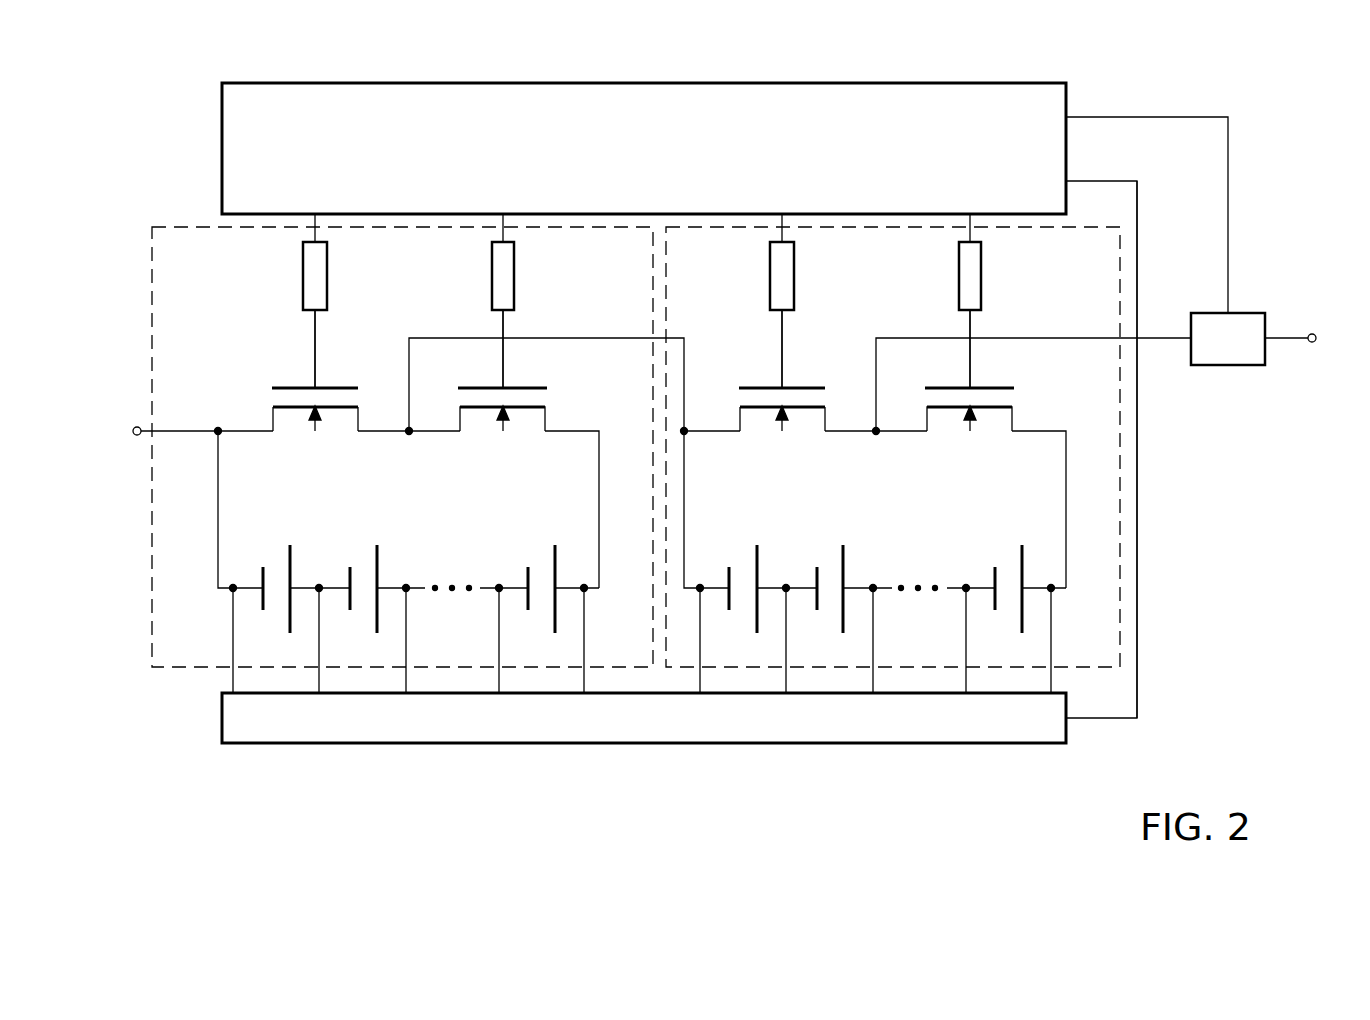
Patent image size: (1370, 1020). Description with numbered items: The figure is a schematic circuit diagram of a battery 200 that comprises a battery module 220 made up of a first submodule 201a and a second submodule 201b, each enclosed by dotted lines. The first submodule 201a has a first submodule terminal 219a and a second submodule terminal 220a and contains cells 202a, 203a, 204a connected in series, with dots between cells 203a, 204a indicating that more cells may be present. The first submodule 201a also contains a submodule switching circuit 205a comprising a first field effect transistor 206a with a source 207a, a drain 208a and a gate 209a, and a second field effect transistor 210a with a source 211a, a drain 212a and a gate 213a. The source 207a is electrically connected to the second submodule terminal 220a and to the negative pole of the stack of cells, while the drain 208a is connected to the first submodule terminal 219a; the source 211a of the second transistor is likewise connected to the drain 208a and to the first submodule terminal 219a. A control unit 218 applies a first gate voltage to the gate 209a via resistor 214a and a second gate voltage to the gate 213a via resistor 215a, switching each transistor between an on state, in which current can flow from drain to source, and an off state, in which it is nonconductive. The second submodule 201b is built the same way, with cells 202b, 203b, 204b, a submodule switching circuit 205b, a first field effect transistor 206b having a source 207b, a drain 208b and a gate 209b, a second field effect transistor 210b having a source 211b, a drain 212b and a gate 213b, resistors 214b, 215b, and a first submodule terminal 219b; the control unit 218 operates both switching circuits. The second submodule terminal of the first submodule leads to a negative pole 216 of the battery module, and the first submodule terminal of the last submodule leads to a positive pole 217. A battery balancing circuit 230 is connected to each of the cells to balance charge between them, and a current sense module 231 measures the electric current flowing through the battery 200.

The battery 200 is at (1290, 108).
The first submodule 201a is at (205, 668).
The second submodule 201b is at (1122, 656).
The cell 202a is at (292, 565).
The cell 202b is at (759, 565).
The cell 203a is at (380, 565).
The cell 203b is at (846, 565).
The cell 204a is at (558, 565).
The cell 204b is at (1025, 565).
The submodule switching circuit 205a is at (271, 370).
The submodule switching circuit 205b is at (762, 350).
The first field effect transistor 206a is at (272, 420).
The first field effect transistor 206b is at (739, 420).
The source 207a is at (250, 433).
The source 207b is at (717, 433).
The drain 208a is at (375, 433).
The drain 208b is at (842, 433).
The gate 209a is at (342, 386).
The gate 209b is at (808, 386).
The second field effect transistor 210a is at (526, 370).
The second field effect transistor 210b is at (994, 370).
The source 211a is at (435, 433).
The source 211b is at (903, 433).
The drain 212a is at (565, 433).
The drain 212b is at (1030, 433).
The gate 213a is at (503, 370).
The gate 213b is at (970, 370).
The resistor 214a is at (328, 268).
The resistor 214b is at (795, 268).
The resistor 215a is at (516, 268).
The resistor 215b is at (983, 268).
The negative pole 216 is at (138, 426).
The positive pole 217 is at (1312, 332).
The control unit 218 is at (220, 145).
The first submodule terminal 219a is at (625, 336).
The first submodule terminal 219b is at (1093, 336).
The battery module 220 is at (1155, 512).
The second submodule terminal 220a is at (175, 433).
The battery balancing circuit 230 is at (952, 745).
The current sense module 231 is at (1215, 365).